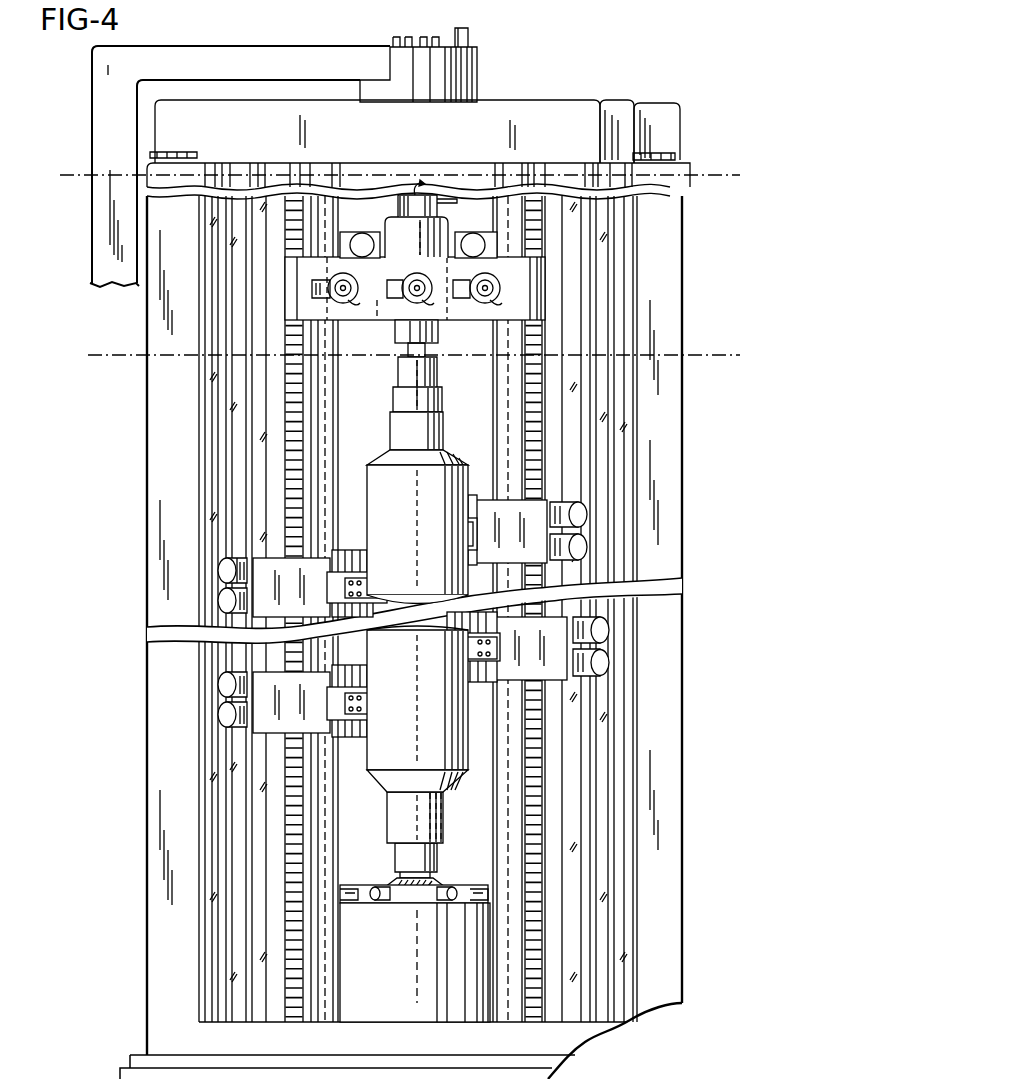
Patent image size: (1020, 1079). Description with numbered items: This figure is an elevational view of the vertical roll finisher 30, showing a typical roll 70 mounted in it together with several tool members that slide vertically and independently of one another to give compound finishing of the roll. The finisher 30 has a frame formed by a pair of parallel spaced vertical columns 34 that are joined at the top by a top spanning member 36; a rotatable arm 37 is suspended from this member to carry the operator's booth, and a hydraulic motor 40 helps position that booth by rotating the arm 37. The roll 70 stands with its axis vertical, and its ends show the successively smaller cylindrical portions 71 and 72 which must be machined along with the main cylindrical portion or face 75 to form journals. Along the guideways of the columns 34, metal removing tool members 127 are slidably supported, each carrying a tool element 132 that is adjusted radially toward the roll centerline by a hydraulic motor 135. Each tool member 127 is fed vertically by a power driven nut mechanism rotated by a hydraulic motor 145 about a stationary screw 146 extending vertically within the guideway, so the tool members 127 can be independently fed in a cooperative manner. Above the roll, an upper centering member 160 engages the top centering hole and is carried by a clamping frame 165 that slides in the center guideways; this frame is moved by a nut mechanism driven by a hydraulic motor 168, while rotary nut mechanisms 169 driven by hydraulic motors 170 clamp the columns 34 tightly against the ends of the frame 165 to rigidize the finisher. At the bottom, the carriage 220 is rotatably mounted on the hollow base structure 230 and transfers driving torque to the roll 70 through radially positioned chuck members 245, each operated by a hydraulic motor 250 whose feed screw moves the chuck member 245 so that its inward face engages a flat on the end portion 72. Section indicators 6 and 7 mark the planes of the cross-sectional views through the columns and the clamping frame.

The vertical roll finisher 30 is at (140, 645).
The vertical columns 34 is at (158, 582).
The top spanning member 36 is at (557, 115).
The rotatable arm 37 is at (276, 46).
The hydraulic motor 40 is at (468, 32).
The roll 70 is at (452, 450).
The cylindrical portion 71 is at (392, 436).
The end portion 72 is at (434, 365).
The main cylindrical portion 75 is at (465, 764).
The metal removing tool member 127 is at (424, 508).
The tool element 132 is at (447, 646).
The hydraulic motor 135 is at (225, 600).
The hydraulic motor 145 is at (225, 570).
The stationary screw 146 is at (286, 396).
The upper centering member 160 is at (410, 352).
The clamping frame 165 is at (464, 320).
The hydraulic motor 168 is at (362, 240).
The rotary nut mechanism 169 is at (489, 280).
The hydraulic motor 170 is at (319, 280).
The carriage 220 is at (457, 886).
The hollow base structure 230 is at (391, 1020).
The chuck member 245 is at (388, 879).
The hydraulic motor 250 is at (435, 897).
The section line 6- 6 is at (740, 400).
The section line 7- 7 is at (740, 222).